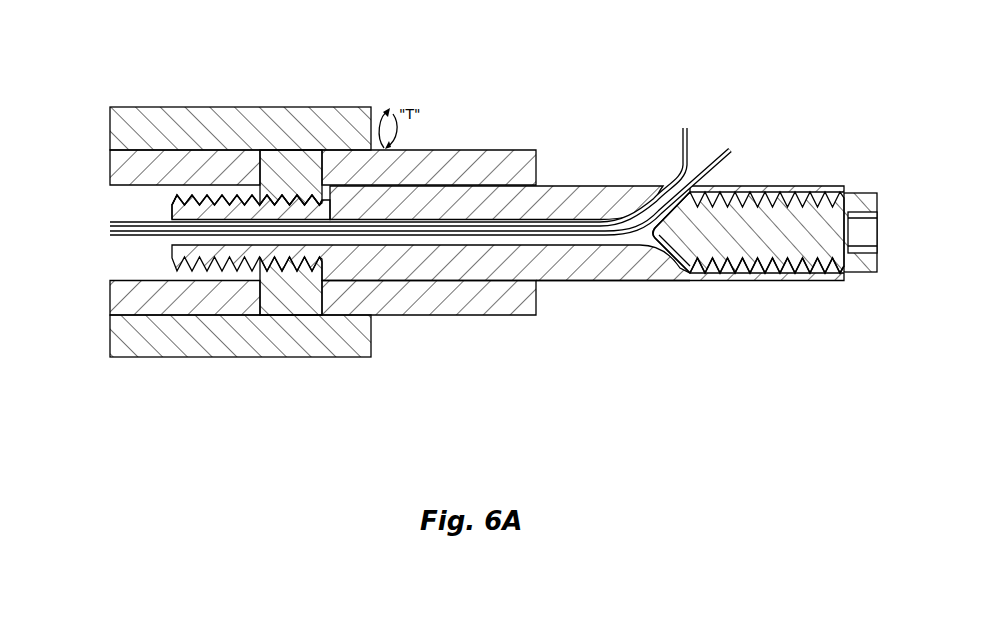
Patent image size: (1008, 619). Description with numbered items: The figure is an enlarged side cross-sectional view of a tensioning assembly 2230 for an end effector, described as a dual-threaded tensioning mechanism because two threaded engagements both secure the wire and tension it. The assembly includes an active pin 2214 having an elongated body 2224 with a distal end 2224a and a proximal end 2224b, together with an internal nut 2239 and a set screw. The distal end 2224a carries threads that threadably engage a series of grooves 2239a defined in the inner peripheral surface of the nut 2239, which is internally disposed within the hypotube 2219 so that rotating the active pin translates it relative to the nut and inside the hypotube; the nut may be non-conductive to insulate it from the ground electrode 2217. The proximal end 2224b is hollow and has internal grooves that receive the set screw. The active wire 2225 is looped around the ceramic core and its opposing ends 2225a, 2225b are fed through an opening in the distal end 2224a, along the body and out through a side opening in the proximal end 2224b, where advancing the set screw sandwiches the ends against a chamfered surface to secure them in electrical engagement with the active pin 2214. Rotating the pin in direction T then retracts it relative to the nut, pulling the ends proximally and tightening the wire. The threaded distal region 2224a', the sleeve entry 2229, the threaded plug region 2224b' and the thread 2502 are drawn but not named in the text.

The ground electrode 2217 is at (226, 113).
The hypotube 2219 is at (437, 150).
The internal nut 2239 is at (323, 168).
The grooves 2239a is at (277, 190).
The upper threaded sleeve portion 2224a' is at (238, 139).
The distal end 2224a is at (486, 324).
The elongated body 2224 is at (597, 195).
The sleeve opening 2229 is at (161, 213).
The active wire 2225 is at (552, 221).
The end of active wire 2225a is at (681, 133).
The end of active wire 2225b is at (723, 148).
The threaded plug 2224b' is at (748, 184).
The proximal end 2224b is at (847, 190).
The tensioning assembly 2230 is at (566, 290).
The active pin 2214 is at (630, 290).
The plug thread 2502 is at (803, 262).